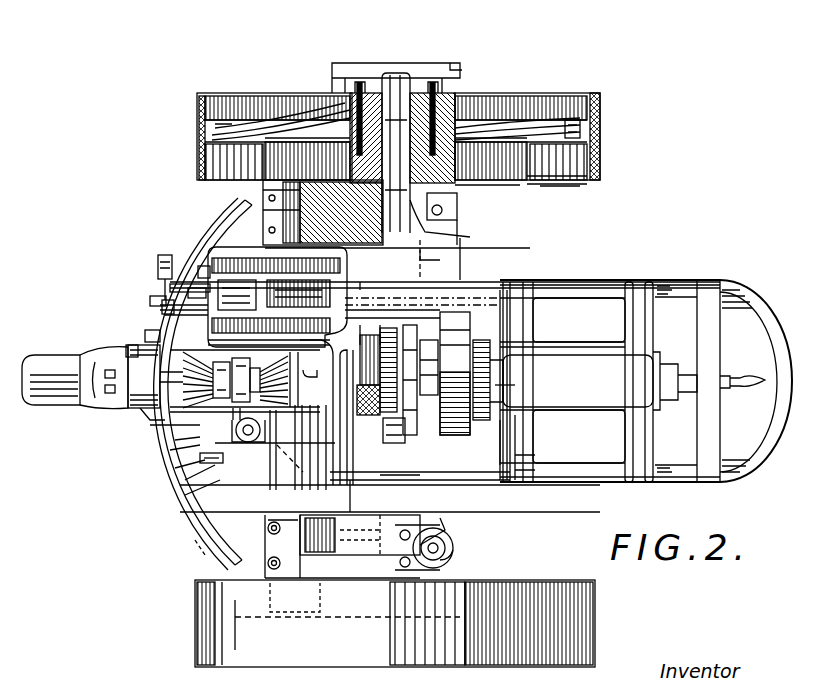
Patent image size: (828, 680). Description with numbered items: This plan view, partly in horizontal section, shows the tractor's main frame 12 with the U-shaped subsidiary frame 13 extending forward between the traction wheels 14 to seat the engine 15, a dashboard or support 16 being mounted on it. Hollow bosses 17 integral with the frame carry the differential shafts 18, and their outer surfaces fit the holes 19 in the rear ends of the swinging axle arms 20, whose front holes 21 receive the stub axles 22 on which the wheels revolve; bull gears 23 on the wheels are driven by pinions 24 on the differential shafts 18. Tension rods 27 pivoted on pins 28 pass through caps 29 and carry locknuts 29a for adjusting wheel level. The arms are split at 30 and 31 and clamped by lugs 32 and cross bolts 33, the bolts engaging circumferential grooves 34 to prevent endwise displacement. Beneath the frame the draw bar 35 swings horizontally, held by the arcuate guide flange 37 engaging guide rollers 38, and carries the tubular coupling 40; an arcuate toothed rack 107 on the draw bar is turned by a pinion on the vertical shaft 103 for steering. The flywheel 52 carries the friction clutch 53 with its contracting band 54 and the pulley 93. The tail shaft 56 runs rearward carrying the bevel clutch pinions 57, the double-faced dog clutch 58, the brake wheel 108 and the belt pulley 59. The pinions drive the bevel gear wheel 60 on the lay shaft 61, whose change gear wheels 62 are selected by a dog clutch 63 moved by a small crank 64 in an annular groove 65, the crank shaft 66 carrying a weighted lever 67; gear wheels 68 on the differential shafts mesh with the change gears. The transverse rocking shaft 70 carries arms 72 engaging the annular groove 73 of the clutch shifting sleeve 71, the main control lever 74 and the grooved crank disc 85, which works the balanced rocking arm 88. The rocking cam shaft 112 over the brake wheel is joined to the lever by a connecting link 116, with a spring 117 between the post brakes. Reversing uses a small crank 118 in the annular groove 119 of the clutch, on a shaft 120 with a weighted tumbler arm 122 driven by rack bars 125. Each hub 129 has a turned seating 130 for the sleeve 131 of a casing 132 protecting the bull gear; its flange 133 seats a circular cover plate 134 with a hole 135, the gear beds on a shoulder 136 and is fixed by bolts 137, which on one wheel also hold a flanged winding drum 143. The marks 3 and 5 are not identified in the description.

The frame 3 is at (373, 270).
The base 5 is at (368, 496).
The main frame 12 is at (440, 260).
The subsidiary frame 13 is at (600, 285).
The traction wheels 14 is at (600, 120).
The engine 15 is at (634, 381).
The support or dashboard 16 is at (510, 440).
The hollow bosses 17 is at (265, 205).
The differential shafts 18 is at (265, 185).
The holes 19 is at (262, 250).
The swinging axle arms 20 is at (455, 245).
The holes 21 is at (455, 233).
The stub axles 22 is at (420, 87).
The bull gears 23 is at (560, 173).
The pinions 24 is at (267, 140).
The tension rods 27 is at (457, 212).
The pins 28 is at (420, 203).
The caps 29 is at (453, 550).
The locknuts 29a is at (457, 563).
The split 30 is at (265, 225).
The split 31 is at (480, 245).
The lugs 32 is at (277, 550).
The cross bolts 33 is at (307, 533).
The circumferential grooves 34 is at (330, 140).
The draw bar 35 is at (107, 363).
The arcuate guide flange 37 is at (205, 525).
The guide rollers 38 is at (153, 420).
The tubular coupling 40 is at (40, 367).
The flywheel 52 is at (425, 370).
The friction clutch 53 is at (480, 373).
The contracting band 54 is at (537, 437).
The tail shaft 56 is at (300, 420).
The bevel clutch pinions 57 is at (160, 307).
The double-faced dog clutch 58 is at (187, 443).
The belt pulley 59 is at (144, 376).
The bevel gear wheel 60 is at (150, 333).
The lay shaft 61 is at (167, 317).
The change gear wheels 62 is at (227, 287).
The double-faced dog clutch 63 is at (213, 273).
The small crank 64 is at (153, 300).
The annular groove 65 is at (197, 290).
The shaft 66 is at (167, 297).
The weighted lever 67 is at (158, 263).
The gear wheels 68 is at (240, 247).
The transverse rocking shaft 70 is at (410, 343).
The clutch shifting sleeve 71 is at (533, 337).
The upwardly extending arms 72 is at (493, 310).
The annular groove 73 is at (507, 390).
The main control lever 74 is at (413, 477).
The grooved pulley or crank disc 85 is at (380, 460).
The balanced rocking arm 88 is at (477, 280).
The pulley 93 is at (533, 337).
The vertical shaft 103 is at (200, 500).
The arcuate toothed rack 107 is at (197, 547).
The brake wheel 108 is at (462, 268).
The rocking cam shaft 112 is at (378, 345).
The connecting link 116 is at (425, 430).
The spring 117 is at (280, 583).
The small crank 118 is at (187, 450).
The annular groove 119 is at (133, 347).
The shaft 120 is at (187, 467).
The weighted tumbler arm 122 is at (200, 460).
The rack bars 125 is at (193, 487).
The hub 129 is at (390, 71).
The turned seating 130 is at (467, 100).
The sleeve 131 is at (500, 135).
The casing 132 is at (575, 120).
The flange 133 is at (560, 187).
The circular cover plate 134 is at (507, 183).
The hole 135 is at (297, 137).
The shoulder 136 is at (343, 125).
The bolts 137 is at (334, 95).
The winding drum 143 is at (460, 67).